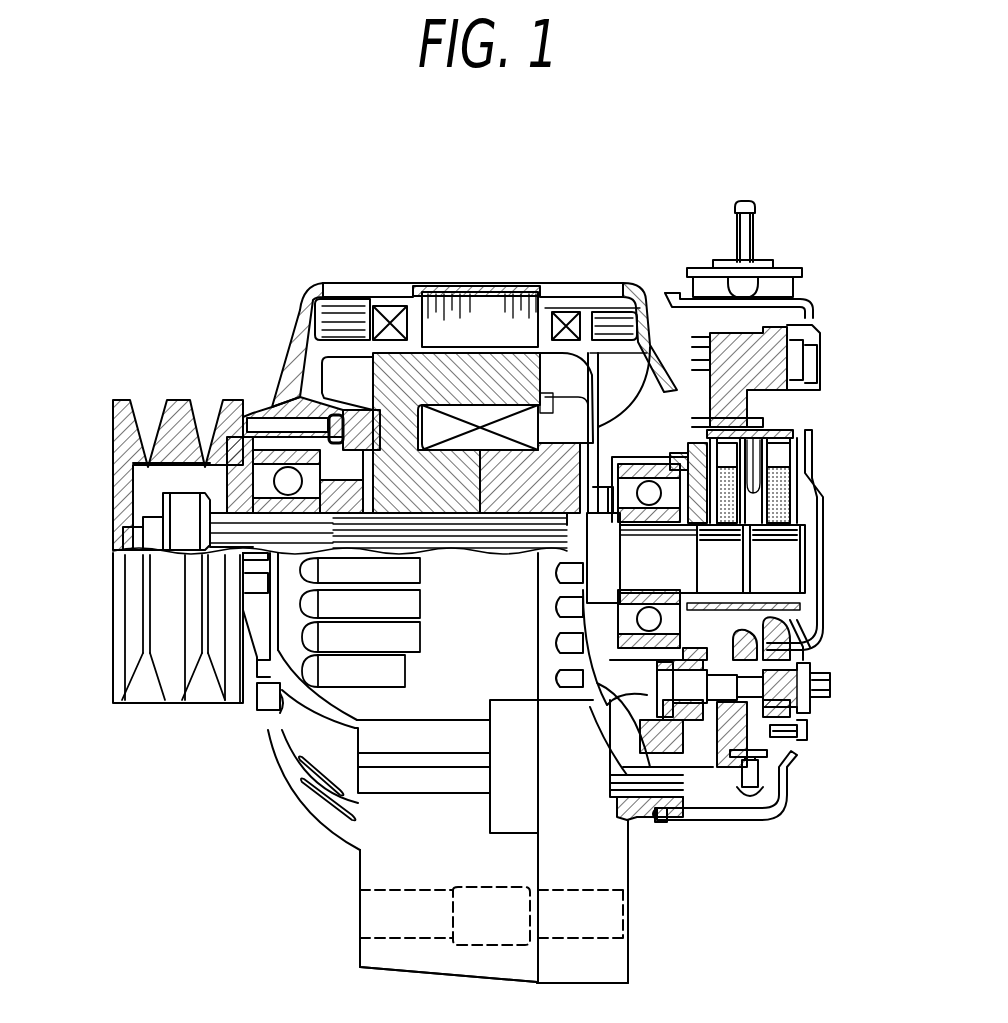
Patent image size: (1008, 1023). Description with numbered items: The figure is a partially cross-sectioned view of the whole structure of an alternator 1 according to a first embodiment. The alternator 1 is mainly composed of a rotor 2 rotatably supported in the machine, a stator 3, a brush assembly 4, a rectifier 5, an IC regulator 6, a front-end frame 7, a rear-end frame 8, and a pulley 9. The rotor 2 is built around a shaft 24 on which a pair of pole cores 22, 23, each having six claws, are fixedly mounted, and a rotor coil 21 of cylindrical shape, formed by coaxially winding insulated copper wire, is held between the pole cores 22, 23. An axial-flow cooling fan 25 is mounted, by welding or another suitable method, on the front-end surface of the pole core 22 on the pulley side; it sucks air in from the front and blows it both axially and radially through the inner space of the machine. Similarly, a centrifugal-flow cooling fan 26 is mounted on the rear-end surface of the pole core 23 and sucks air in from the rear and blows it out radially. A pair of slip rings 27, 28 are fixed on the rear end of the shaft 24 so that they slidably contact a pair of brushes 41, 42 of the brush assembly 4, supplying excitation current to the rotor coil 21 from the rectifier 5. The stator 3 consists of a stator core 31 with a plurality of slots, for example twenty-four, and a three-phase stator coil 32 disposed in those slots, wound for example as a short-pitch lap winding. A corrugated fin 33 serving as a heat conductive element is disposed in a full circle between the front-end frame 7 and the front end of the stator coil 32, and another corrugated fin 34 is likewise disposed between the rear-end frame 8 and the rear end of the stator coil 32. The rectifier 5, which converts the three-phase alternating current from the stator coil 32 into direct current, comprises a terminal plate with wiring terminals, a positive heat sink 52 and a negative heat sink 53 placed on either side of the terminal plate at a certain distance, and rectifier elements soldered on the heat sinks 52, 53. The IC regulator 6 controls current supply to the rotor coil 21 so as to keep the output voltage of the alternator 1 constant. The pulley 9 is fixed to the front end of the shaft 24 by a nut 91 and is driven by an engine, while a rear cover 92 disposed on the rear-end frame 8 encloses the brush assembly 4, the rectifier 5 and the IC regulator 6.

The alternator 1 is at (747, 195).
The rotor 2 is at (411, 364).
The stator 3 is at (486, 282).
The brush assembly 4 is at (795, 427).
The rectifier 5 is at (812, 729).
The IC regulator 6 is at (810, 323).
The front-end frame 7 is at (362, 950).
The rear-end frame 8 is at (630, 957).
The pulley 9 is at (160, 410).
The rotor coil 21 is at (515, 405).
The pole core 22 is at (328, 368).
The pole core 23 is at (567, 370).
The shaft 24 is at (172, 400).
The axial-flow cooling fan 25 is at (317, 392).
The centrifugal-flow cooling fan 26 is at (652, 330).
The slip ring 27 is at (740, 577).
The slip ring 28 is at (790, 548).
The stator core 31 is at (462, 300).
The stator coil 32 is at (390, 306).
The corrugated fin 33 is at (345, 306).
The corrugated fin 34 is at (618, 312).
The brush 41 is at (780, 466).
The brush 42 is at (795, 497).
The positive heat sink 52 is at (793, 757).
The negative heat sink 53 is at (785, 643).
The nut 91 is at (165, 497).
The rear cover 92 is at (762, 815).